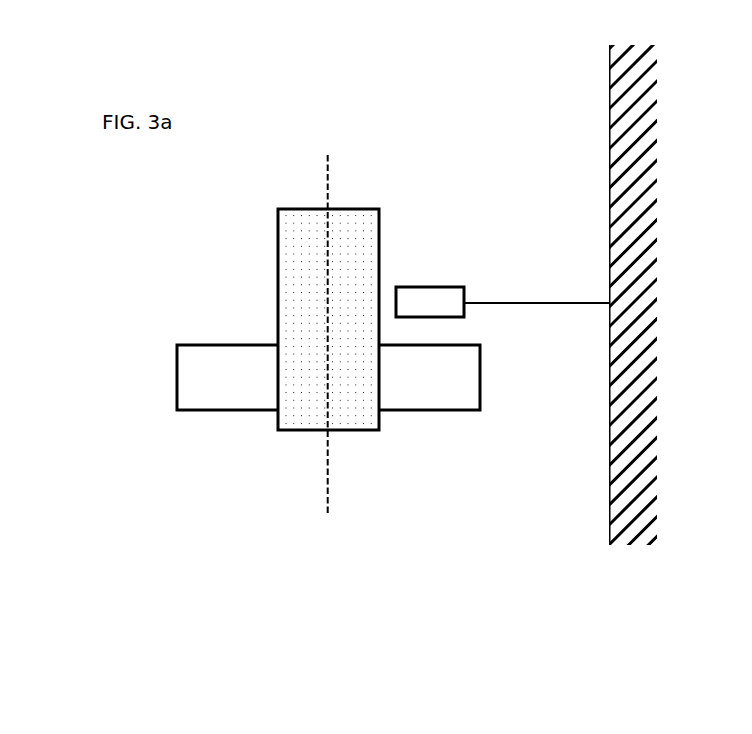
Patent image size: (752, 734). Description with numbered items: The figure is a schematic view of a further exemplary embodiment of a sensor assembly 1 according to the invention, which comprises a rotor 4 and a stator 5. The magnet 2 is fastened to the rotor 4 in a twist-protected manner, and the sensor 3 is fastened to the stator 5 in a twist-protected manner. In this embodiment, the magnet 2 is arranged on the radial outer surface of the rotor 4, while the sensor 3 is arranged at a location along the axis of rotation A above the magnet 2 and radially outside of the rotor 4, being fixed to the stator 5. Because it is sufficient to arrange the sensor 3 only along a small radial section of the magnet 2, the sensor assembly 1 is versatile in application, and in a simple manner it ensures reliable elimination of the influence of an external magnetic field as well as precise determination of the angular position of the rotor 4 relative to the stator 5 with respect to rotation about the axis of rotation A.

The sensor assembly 1 is at (450, 463).
The magnet 2 is at (177, 387).
The sensor 3 is at (428, 287).
The rotor 4 is at (278, 251).
The stator 5 is at (609, 72).
The axis of rotation A is at (327, 484).